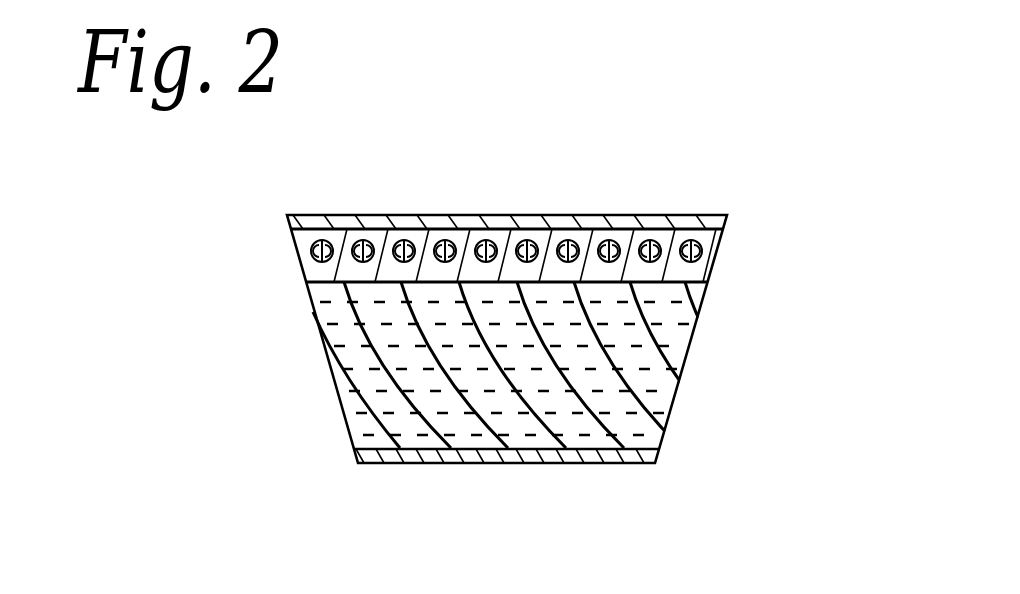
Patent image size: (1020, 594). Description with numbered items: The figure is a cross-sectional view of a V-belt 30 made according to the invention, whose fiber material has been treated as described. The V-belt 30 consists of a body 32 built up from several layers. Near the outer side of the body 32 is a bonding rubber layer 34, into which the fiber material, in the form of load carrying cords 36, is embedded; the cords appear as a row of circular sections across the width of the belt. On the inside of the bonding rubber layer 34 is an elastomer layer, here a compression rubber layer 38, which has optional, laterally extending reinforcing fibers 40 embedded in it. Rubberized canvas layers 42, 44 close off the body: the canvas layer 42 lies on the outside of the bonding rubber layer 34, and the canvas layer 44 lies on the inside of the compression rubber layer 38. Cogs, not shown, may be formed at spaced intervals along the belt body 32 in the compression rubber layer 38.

The V-belt 30 is at (733, 173).
The body 32 is at (703, 308).
The bonding rubber layer 34 is at (306, 242).
The load carrying cords 36 is at (705, 238).
The compression rubber layer 38 is at (655, 378).
The reinforcing fibers 40 is at (577, 433).
The rubberized canvas layer 42 is at (367, 215).
The rubberized canvas layer 44 is at (462, 456).